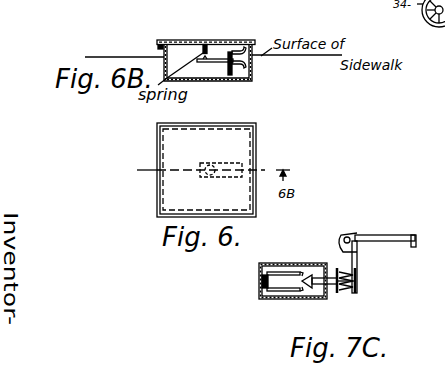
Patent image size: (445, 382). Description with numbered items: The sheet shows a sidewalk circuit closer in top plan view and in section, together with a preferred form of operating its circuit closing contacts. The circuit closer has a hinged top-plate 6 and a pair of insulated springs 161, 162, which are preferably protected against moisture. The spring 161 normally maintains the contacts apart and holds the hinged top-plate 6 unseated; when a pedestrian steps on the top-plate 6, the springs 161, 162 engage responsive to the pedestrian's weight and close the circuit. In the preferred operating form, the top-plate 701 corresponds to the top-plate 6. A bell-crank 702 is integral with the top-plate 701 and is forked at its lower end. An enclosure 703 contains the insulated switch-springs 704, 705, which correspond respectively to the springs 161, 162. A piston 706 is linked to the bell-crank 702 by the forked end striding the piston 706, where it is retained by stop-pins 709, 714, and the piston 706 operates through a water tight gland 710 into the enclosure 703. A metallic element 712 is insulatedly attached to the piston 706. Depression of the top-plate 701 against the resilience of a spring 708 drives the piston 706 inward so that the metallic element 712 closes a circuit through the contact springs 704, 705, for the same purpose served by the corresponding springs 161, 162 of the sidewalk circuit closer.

In FIG. 6B, the hinged top-plate 6 is at (194, 41).
In FIG. 6, the hinged top-plate 6 is at (201, 170).
In FIG. 6B, the spring 161 is at (246, 52).
In FIG. 6B, the spring 162 is at (242, 71).
In FIG. 7C, the top-plate 701 is at (378, 237).
In FIG. 7C, the bell-crank 702 is at (338, 244).
In FIG. 7C, the enclosure 703 is at (272, 259).
In FIG. 7C, the switch-spring 704 is at (295, 272).
In FIG. 7C, the switch-spring 705 is at (283, 291).
In FIG. 7C, the piston 706 is at (316, 284).
In FIG. 7C, the spring 708 is at (338, 290).
In FIG. 7C, the stop-pin 709 is at (358, 281).
In FIG. 7C, the water tight gland 710 is at (333, 288).
In FIG. 7C, the metallic element 712 is at (307, 290).
In FIG. 7C, the stop-pin 714 is at (356, 277).